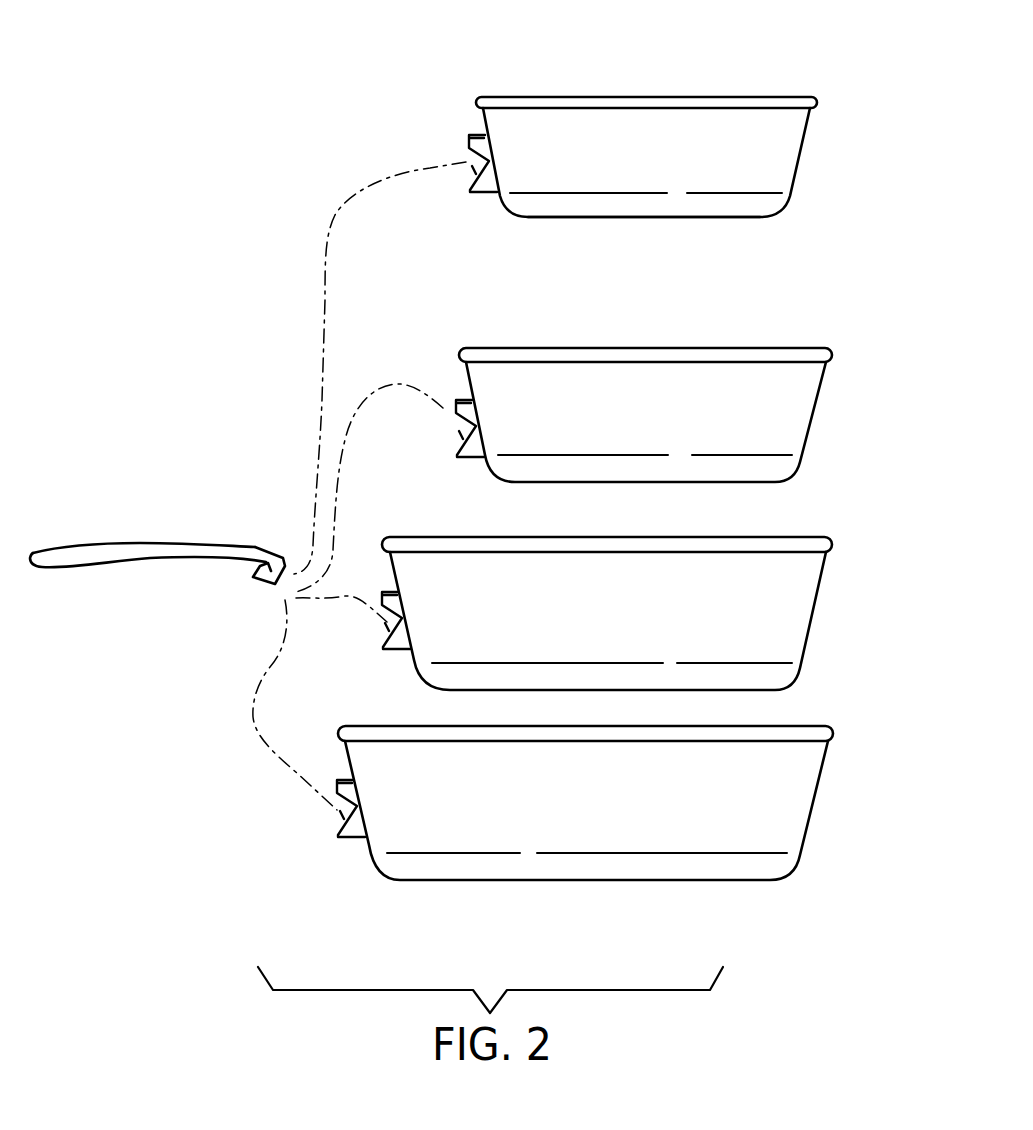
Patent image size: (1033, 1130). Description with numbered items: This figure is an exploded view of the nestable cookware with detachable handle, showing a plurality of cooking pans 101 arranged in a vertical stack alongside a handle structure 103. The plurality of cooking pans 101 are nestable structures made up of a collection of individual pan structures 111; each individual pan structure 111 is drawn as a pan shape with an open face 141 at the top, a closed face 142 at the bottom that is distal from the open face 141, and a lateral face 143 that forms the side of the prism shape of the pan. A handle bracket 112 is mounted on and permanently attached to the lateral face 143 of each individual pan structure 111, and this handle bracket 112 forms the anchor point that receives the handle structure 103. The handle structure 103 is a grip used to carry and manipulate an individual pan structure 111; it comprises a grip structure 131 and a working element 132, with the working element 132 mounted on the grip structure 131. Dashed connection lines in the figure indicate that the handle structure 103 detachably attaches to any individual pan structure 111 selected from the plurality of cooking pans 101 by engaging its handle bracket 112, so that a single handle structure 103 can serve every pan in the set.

The plurality of cooking pans 101 is at (808, 331).
The handle structure 103 is at (157, 468).
The individual pan structure 111 is at (682, 144).
The handle bracket 112 is at (470, 135).
The grip structure 131 is at (100, 553).
The working element 132 is at (263, 543).
The open face 141 is at (759, 97).
The closed face 142 is at (733, 217).
The lateral face 143 is at (777, 155).